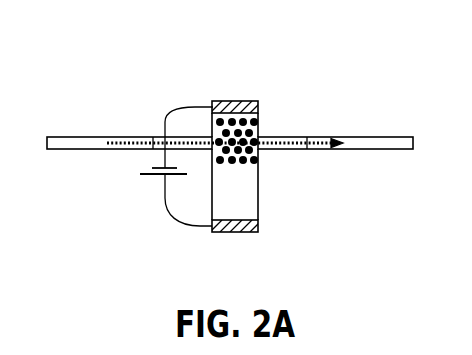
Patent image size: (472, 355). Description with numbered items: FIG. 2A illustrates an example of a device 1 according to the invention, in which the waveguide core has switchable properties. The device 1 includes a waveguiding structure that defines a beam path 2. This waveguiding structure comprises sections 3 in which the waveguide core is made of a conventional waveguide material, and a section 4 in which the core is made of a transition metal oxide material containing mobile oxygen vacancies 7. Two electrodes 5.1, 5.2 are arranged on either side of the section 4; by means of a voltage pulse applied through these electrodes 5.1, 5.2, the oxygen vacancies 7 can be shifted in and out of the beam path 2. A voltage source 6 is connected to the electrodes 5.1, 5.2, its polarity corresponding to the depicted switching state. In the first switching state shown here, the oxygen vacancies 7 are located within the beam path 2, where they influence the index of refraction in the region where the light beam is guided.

The device 1 is at (133, 86).
The beam path 2 is at (323, 138).
The sections 3 is at (66, 146).
The section 4 is at (250, 197).
The electrode 5.1 is at (255, 101).
The electrode 5.2 is at (229, 228).
The voltage source 6 is at (160, 177).
The oxygen vacancies 7 is at (220, 120).